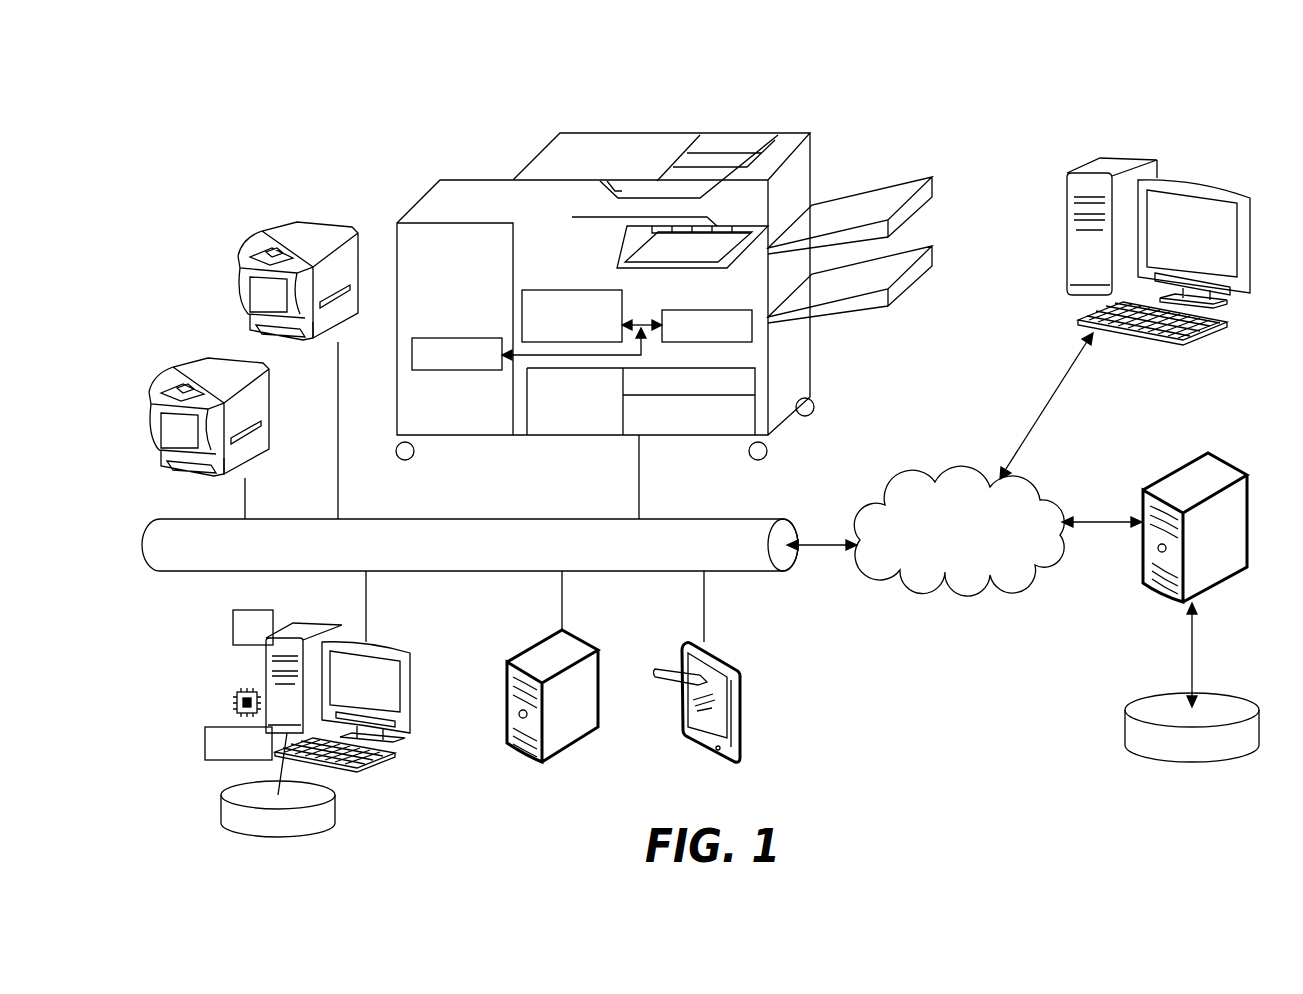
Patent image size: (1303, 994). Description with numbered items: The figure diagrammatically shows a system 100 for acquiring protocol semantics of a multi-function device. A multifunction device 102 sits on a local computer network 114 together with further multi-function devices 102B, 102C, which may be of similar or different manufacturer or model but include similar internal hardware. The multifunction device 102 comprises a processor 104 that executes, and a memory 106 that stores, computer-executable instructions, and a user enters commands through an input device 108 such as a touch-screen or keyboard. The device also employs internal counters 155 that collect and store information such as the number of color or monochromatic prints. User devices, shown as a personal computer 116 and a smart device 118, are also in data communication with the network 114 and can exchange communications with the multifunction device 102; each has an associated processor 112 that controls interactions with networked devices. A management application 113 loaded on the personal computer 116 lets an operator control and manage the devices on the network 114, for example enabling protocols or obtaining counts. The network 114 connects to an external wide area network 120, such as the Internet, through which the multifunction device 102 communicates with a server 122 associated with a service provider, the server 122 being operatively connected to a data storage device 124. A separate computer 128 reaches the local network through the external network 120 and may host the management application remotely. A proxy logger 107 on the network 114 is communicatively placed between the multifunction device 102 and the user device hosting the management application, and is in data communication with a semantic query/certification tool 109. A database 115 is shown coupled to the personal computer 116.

The system 100 is at (968, 125).
The multifunction device 102 is at (628, 148).
The multi-function device 102B is at (278, 228).
The multi-function device 102C is at (290, 394).
The processor 104 is at (582, 290).
The memory 106 is at (713, 310).
The proxy logger 107 is at (570, 745).
The input device 108 is at (657, 251).
The semantic query/certification tool 109 is at (223, 760).
The processor 112 is at (233, 702).
The management application 113 is at (233, 628).
The network 114 is at (696, 518).
The database 115 is at (335, 812).
The personal computer 116 is at (267, 672).
The smart device 118 is at (740, 713).
The external wide area network 120 is at (940, 478).
The server 122 is at (1183, 467).
The data storage device 124 is at (1125, 726).
The computer 128 is at (1197, 180).
The internal counters 155 is at (452, 338).